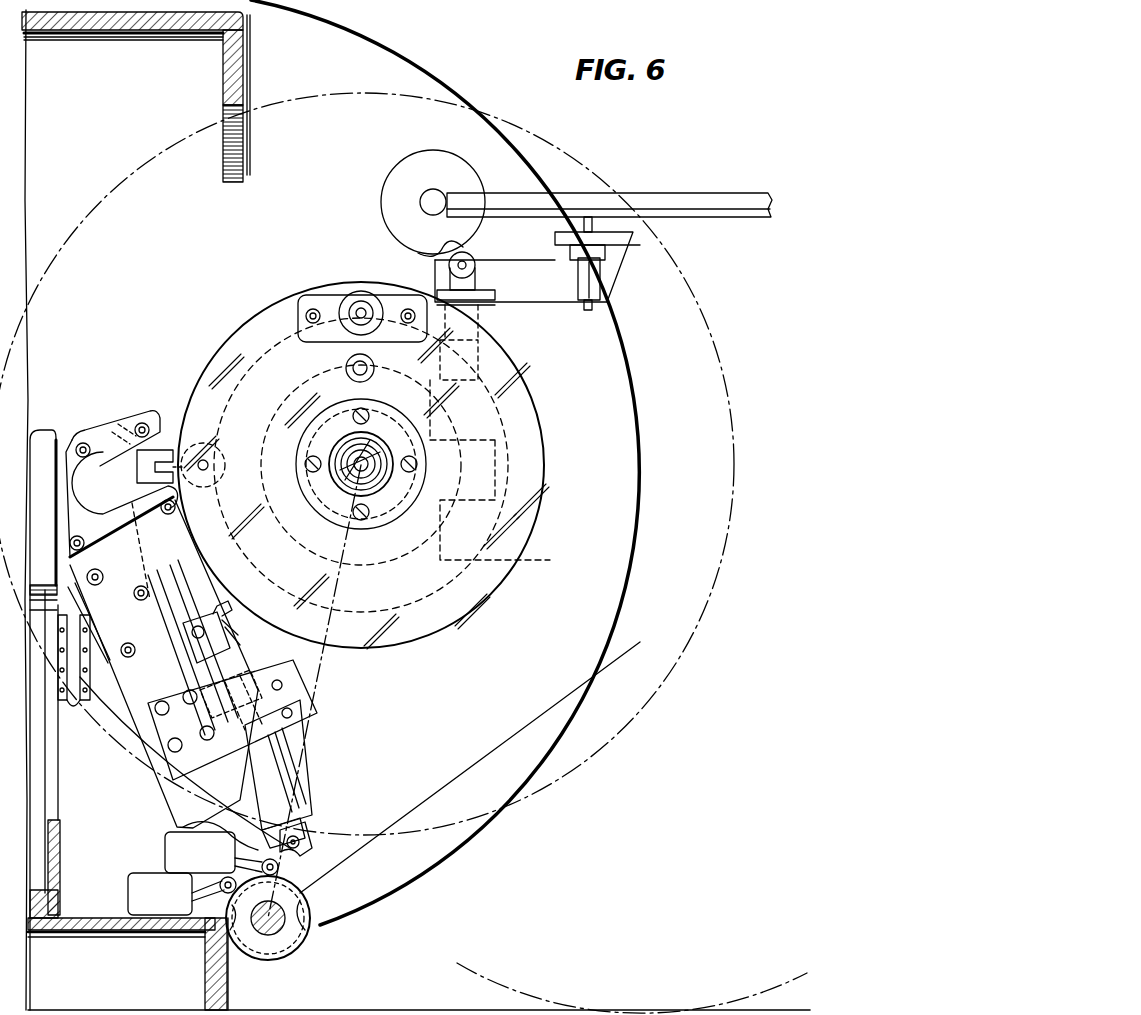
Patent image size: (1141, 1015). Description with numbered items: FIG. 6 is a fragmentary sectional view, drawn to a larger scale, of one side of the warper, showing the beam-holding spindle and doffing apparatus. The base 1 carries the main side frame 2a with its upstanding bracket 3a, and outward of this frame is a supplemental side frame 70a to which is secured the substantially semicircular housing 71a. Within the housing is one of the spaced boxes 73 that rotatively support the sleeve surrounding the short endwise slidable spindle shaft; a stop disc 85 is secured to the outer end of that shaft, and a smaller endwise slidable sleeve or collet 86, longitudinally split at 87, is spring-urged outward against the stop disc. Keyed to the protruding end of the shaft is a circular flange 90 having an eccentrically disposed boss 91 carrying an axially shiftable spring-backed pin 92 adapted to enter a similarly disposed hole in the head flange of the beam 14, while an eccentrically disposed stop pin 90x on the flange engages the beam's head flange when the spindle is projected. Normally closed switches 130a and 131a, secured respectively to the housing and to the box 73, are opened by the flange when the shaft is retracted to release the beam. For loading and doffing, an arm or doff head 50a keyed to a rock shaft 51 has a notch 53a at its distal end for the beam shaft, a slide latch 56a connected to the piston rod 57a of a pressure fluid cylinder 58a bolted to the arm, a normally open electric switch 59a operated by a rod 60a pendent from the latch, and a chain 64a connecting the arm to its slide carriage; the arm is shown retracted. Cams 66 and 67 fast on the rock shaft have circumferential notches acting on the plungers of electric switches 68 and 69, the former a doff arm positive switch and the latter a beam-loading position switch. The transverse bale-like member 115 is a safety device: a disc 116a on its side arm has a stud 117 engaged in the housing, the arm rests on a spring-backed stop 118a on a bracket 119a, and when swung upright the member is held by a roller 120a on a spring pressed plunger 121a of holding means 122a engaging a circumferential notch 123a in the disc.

The base 1 is at (122, 905).
The side frame 2a is at (62, 768).
The upstanding bracket 3a is at (37, 431).
The beam 14 is at (703, 390).
The arm 50a is at (331, 775).
The rock shaft 51 is at (283, 946).
The notch 53a is at (130, 543).
The slide latch 56a is at (137, 591).
The piston rod 57a is at (188, 683).
The pressure fluid cylinder 58a is at (262, 780).
The electric switch 59a is at (302, 694).
The rod 60a is at (292, 757).
The chain 64a is at (96, 702).
The cam 66 is at (297, 944).
The cam 67 is at (308, 903).
The electric switch 68 is at (182, 894).
The electric switch 69 is at (221, 853).
The supplemental side frame 70a is at (240, 56).
The housing 71a is at (418, 76).
The box 73 is at (500, 440).
The stop disc 85 is at (388, 480).
The collet 86 is at (387, 487).
The longitudinal split 87 is at (350, 452).
The circular flange 90 is at (247, 338).
The stop pin 90x is at (351, 365).
The boss 91 is at (325, 298).
The pin 92 is at (361, 308).
The bale-like member 115 is at (700, 197).
The disc 116a is at (418, 156).
The stud 117 is at (427, 197).
The spring-backed stop 118a is at (602, 262).
The bracket 119a is at (610, 282).
The roller 120a is at (473, 258).
The spring pressed plunger 121a is at (472, 282).
The holding means 122a is at (474, 309).
The circumferential notch 123a is at (396, 223).
The normally closed switch 130a is at (163, 450).
The normally closed switch 131a is at (204, 452).